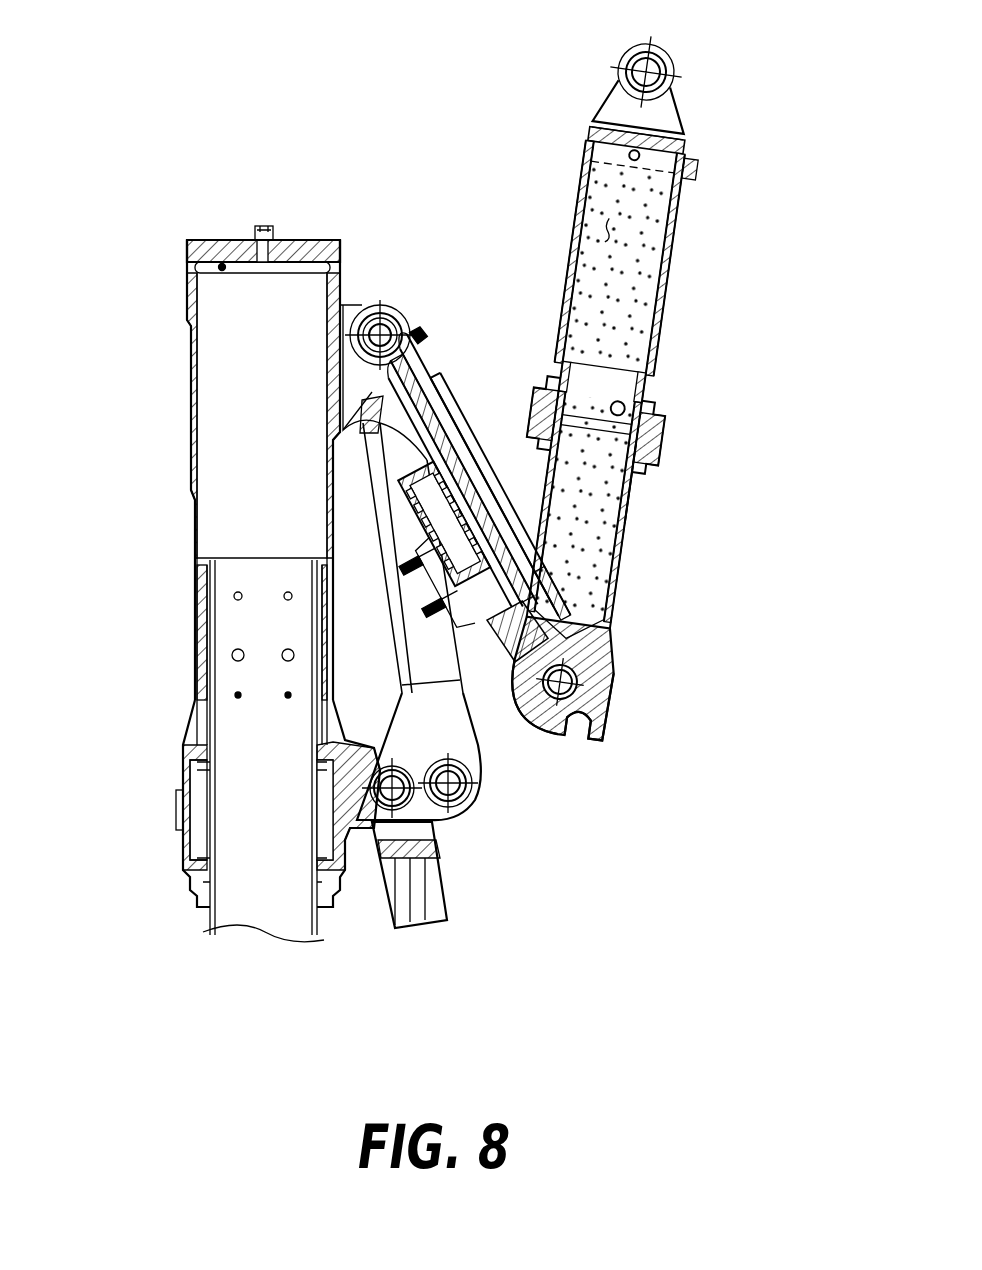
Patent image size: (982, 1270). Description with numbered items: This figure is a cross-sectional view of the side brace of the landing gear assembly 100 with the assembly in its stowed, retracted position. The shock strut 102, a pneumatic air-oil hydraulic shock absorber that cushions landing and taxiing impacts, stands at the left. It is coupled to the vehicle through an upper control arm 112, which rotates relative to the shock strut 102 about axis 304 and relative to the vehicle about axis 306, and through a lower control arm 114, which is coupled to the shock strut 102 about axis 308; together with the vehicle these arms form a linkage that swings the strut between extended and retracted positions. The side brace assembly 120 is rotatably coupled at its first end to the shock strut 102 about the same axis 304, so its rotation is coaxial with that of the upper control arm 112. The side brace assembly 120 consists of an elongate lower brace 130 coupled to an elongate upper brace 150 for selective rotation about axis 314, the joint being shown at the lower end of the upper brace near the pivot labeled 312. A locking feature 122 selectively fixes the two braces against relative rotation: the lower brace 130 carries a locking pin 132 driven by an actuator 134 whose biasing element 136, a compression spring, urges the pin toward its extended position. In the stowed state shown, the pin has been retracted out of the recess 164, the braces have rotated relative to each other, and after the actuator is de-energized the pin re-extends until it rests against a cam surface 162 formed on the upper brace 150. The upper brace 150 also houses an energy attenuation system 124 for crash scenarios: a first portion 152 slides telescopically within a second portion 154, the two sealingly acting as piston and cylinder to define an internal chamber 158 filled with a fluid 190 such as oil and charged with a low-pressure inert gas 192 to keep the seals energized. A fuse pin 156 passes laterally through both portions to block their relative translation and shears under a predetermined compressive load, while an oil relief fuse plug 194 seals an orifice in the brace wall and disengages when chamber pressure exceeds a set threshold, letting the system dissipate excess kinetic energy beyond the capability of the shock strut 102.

The landing gear assembly 100 is at (143, 165).
The shock strut 102 is at (190, 400).
The upper control arm 112 is at (420, 591).
The lower control arm 114 is at (441, 875).
The side brace assembly 120 is at (440, 255).
The locking feature 122 is at (520, 738).
The energy attenuation system 124 is at (648, 470).
The lower brace 130 is at (429, 397).
The locking pin 132 is at (503, 654).
The actuator 134 is at (537, 575).
The biasing element 136 is at (457, 482).
The upper brace 150 is at (655, 350).
The first portion 152 is at (625, 515).
The second portion 154 is at (660, 270).
The fuse pin 156 is at (660, 420).
The internal chamber 158 is at (615, 240).
The cam surface 162 is at (531, 728).
The recess 164 is at (588, 733).
The fluid 190 is at (650, 210).
The low-pressure inert gas 192 is at (680, 150).
The oil relief fuse plug 194 is at (693, 160).
The axis 304 is at (392, 316).
The axis 306 is at (456, 806).
The axis 308 is at (392, 774).
The upper eyelet 312 is at (662, 58).
The axis 314 is at (580, 682).